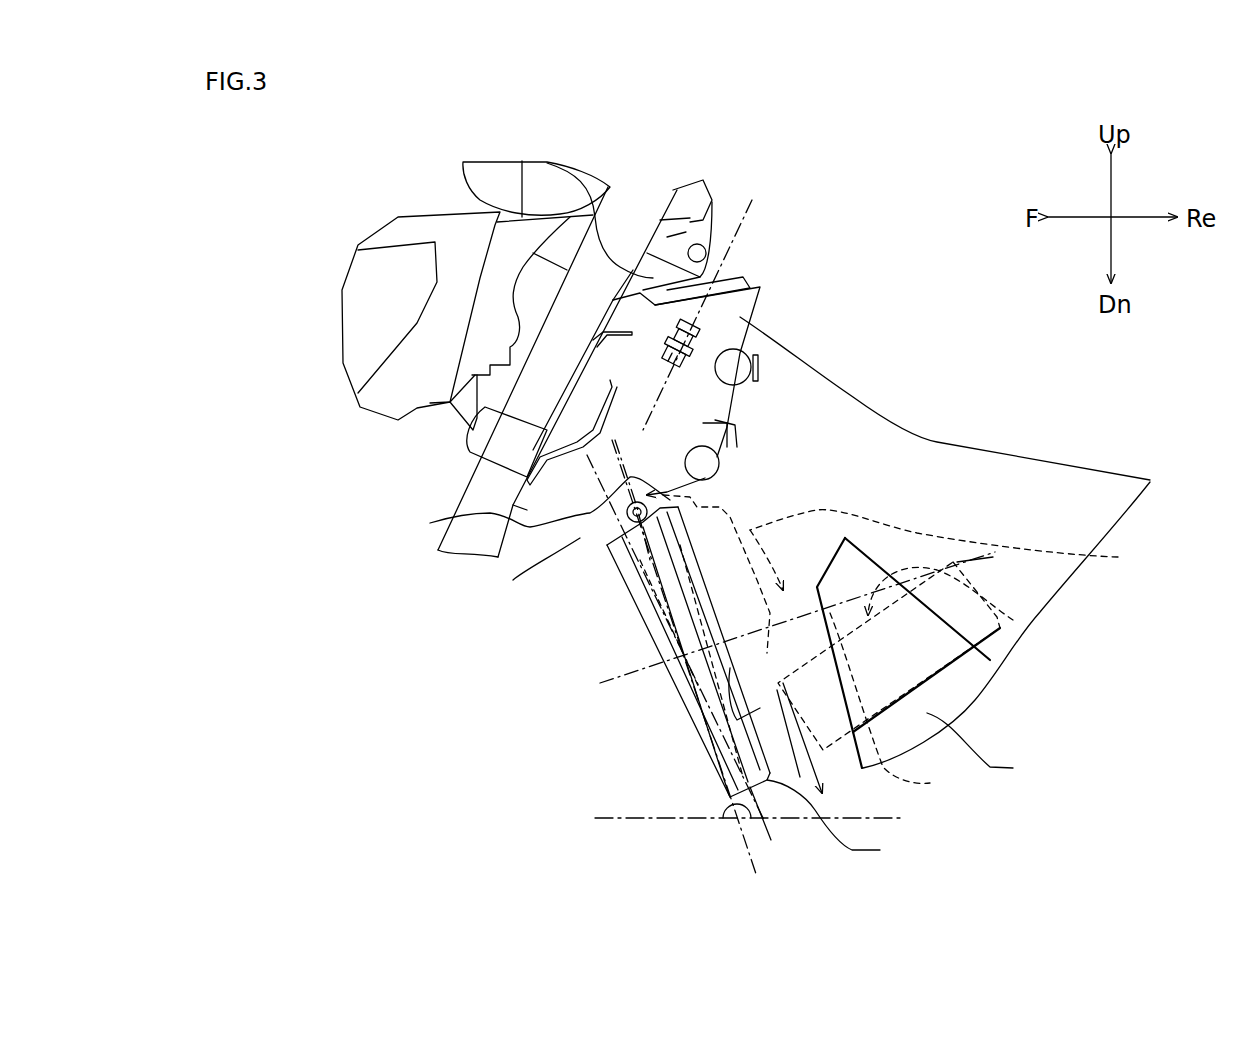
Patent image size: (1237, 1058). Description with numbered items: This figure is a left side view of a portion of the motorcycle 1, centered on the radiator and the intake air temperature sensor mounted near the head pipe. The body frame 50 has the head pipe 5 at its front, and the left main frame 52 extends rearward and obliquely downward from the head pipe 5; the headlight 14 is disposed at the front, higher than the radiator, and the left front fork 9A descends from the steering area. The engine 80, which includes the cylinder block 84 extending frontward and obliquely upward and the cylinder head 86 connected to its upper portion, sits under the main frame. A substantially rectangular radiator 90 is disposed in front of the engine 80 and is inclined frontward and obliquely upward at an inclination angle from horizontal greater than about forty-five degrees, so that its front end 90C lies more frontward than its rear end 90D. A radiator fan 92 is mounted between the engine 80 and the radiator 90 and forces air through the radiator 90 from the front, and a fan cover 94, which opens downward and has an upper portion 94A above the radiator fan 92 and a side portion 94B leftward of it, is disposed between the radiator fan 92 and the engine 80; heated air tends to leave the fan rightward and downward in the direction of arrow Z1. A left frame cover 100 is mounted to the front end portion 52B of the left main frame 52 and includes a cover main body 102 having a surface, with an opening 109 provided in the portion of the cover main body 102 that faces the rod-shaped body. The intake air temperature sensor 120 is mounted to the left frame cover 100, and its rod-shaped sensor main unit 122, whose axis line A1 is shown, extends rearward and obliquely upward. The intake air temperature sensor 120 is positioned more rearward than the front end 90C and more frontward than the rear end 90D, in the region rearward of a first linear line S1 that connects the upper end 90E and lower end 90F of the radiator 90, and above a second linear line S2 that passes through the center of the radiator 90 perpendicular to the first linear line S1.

The motorcycle 1 is at (898, 212).
The head pipe 5 is at (670, 188).
The left front fork 9A is at (630, 207).
The headlight 14 is at (352, 270).
The body frame 50 is at (941, 440).
The left main frame 52 is at (1027, 473).
The front end portion of the left main frame 52B is at (575, 200).
The engine 80 is at (990, 625).
The cylinder block 84 is at (984, 749).
The cylinder head 86 is at (913, 650).
The radiator 90 is at (620, 598).
The front end of the radiator 90C is at (605, 545).
The rear end of the radiator 90D is at (848, 823).
The upper end of the radiator 90E is at (618, 594).
The lower end of the radiator 90F is at (730, 797).
The radiator fan 92 is at (727, 693).
The fan cover 94 is at (909, 574).
The upper portion of the fan cover 94A is at (432, 523).
The side portion of the fan cover 94B is at (903, 707).
The left frame cover 100 is at (765, 290).
The cover main body 102 is at (722, 250).
The opening 109 is at (655, 305).
The intake air temperature sensor 120 is at (745, 380).
The sensor main unit 122 is at (700, 365).
The axis line of the sensor main unit A1 is at (760, 215).
The first linear line S1 is at (752, 858).
The second linear line S2 is at (600, 683).
The arrow Z1 is at (821, 747).